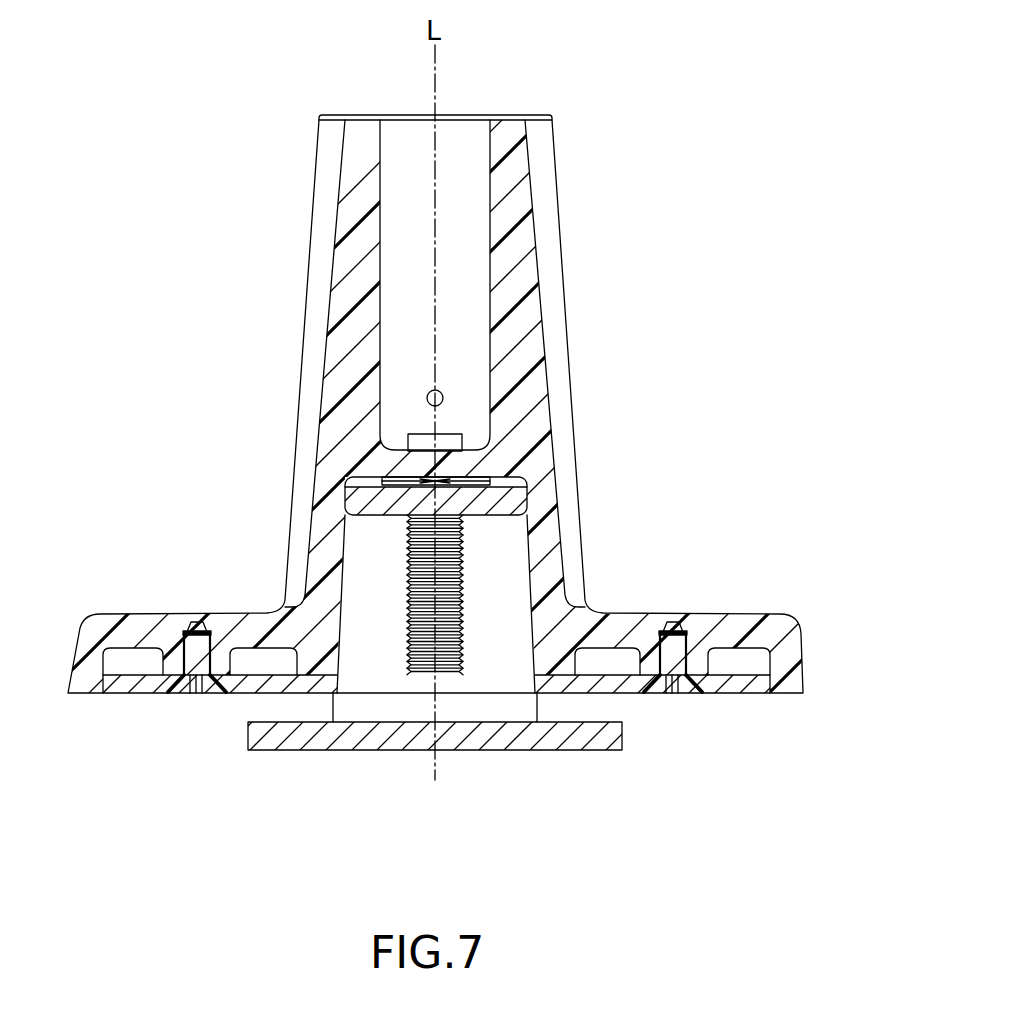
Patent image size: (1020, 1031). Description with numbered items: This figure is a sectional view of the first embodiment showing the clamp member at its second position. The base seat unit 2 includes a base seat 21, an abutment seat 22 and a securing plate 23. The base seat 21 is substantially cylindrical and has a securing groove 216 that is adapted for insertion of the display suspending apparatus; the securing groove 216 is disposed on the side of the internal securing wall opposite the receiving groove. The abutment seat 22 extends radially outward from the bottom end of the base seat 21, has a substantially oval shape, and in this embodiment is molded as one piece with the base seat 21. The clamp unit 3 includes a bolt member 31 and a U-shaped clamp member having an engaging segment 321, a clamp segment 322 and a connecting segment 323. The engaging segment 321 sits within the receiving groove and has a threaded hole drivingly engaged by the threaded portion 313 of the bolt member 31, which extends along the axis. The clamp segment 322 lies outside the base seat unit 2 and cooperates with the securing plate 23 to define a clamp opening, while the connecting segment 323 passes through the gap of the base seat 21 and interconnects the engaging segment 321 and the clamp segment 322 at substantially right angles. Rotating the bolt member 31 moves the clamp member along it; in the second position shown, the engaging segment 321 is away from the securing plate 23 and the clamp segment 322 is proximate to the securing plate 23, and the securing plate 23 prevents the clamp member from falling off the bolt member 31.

The base seat unit 2 is at (510, 515).
The base seat 21 is at (562, 118).
The securing groove 216 is at (468, 142).
The abutment seat 22 is at (770, 624).
The securing plate 23 is at (242, 682).
The clamp unit 3 is at (428, 600).
The bolt member 31 is at (418, 443).
The threaded portion 313 is at (407, 590).
The engaging segment 321 is at (500, 503).
The clamp segment 322 is at (354, 742).
The connecting segment 323 is at (498, 592).